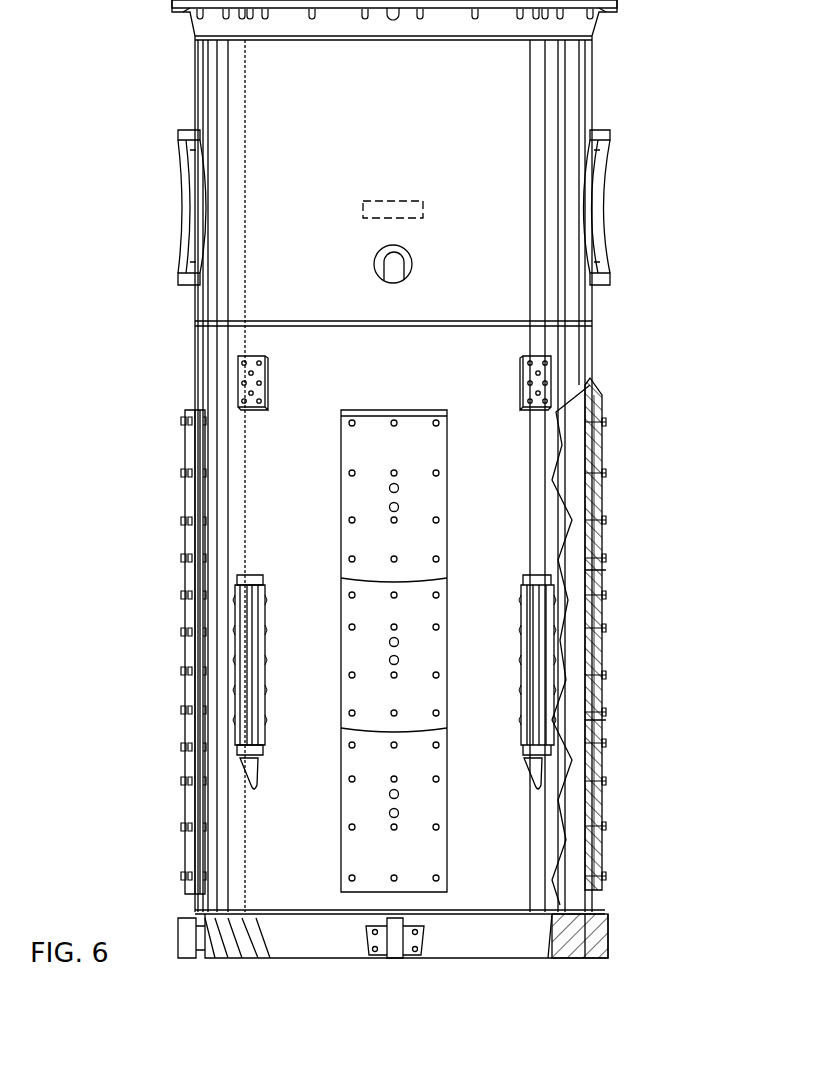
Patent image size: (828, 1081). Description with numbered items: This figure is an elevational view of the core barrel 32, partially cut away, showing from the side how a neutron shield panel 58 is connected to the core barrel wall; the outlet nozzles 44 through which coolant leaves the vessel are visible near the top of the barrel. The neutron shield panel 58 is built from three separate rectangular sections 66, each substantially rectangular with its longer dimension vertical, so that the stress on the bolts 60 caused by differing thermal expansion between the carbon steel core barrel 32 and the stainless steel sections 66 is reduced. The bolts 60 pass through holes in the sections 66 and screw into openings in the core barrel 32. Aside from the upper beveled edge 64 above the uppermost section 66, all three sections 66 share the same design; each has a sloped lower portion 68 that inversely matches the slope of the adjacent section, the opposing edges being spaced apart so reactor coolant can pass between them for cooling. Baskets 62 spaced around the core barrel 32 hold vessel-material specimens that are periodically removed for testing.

The core barrel 32 is at (592, 90).
The outlet nozzle 44 is at (190, 130).
The neutron shield panel 58 is at (185, 432).
The bolt 60 is at (394, 423).
The basket 62 is at (530, 575).
The upper beveled edge 64 is at (368, 410).
The rectangular section 66 is at (447, 505).
The sloped lower portion 68 is at (606, 578).